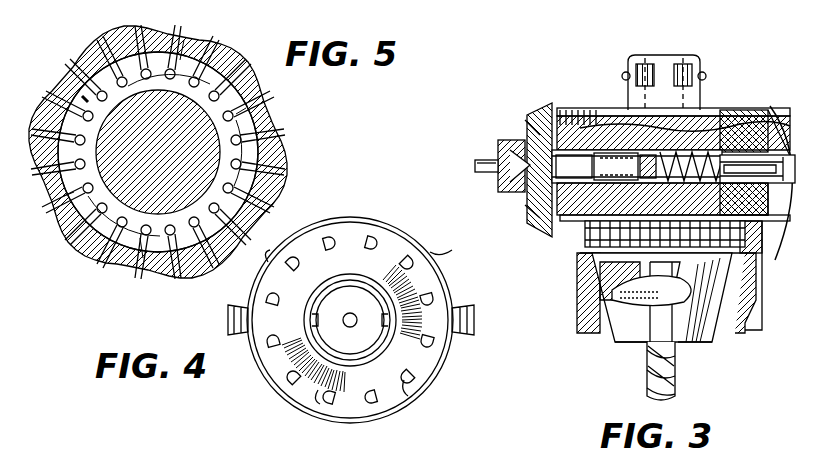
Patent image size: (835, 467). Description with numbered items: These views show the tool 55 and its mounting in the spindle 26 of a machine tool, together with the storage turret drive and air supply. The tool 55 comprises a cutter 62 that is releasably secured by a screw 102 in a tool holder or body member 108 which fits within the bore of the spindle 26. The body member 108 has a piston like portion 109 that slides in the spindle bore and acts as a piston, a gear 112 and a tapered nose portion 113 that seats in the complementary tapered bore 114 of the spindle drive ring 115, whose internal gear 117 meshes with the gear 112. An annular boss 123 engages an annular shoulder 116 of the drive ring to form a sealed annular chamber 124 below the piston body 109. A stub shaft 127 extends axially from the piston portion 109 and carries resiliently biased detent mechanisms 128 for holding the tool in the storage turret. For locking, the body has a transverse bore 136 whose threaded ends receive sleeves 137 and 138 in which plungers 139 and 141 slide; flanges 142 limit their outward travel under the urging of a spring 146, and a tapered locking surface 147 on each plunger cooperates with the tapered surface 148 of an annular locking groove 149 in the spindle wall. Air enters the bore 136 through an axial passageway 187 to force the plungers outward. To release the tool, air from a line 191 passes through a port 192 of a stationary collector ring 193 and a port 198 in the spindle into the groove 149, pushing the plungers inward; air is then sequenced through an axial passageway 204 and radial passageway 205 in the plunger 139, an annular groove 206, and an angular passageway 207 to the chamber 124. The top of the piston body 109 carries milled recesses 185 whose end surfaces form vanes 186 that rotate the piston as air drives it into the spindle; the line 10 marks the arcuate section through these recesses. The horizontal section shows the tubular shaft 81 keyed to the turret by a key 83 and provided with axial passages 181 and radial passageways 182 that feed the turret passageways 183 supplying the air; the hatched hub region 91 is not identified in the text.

In FIG. 4, the section line 10 is at (378, 230).
In FIG. 3, the spindle 26 is at (790, 136).
In FIG. 3, the tool 55 is at (568, 374).
In FIG. 3, the cutter 62 is at (676, 388).
In FIG. 5, the tubular shaft 81 is at (135, 272).
In FIG. 5, the key 83 is at (82, 98).
In FIG. 5, the hub 91 is at (44, 211).
In FIG. 3, the screw 102 is at (600, 300).
In FIG. 3, the tool holder or body member 108 is at (716, 84).
In FIG. 4, the piston like portion 109 is at (452, 294).
In FIG. 3, the piston like portion 109 is at (612, 108).
In FIG. 3, the gear 112 is at (612, 294).
In FIG. 3, the nose portion 113 is at (634, 344).
In FIG. 3, the tapered bore 114 is at (690, 344).
In FIG. 3, the spindle drive ring 115 is at (742, 316).
In FIG. 3, the annular shoulder 116 is at (586, 244).
In FIG. 3, the internal gear 117 is at (756, 248).
In FIG. 3, the annular boss 123 is at (588, 248).
In FIG. 3, the annular chamber 124 is at (580, 236).
In FIG. 4, the stub shaft 127 is at (356, 300).
In FIG. 3, the stub shaft 127 is at (640, 54).
In FIG. 4, the detent mechanisms 128 is at (302, 322).
In FIG. 3, the detent mechanisms 128 is at (712, 66).
In FIG. 3, the transverse bore 136 is at (673, 129).
In FIG. 3, the threaded sleeve 137 is at (550, 104).
In FIG. 3, the threaded sleeve 138 is at (732, 112).
In FIG. 4, the plunger 139 is at (228, 320).
In FIG. 3, the plunger 139 is at (637, 169).
In FIG. 4, the plunger 141 is at (468, 328).
In FIG. 3, the plunger 141 is at (764, 236).
In FIG. 3, the radially extending flanges 142 is at (691, 162).
In FIG. 3, the spring 146 is at (673, 202).
In FIG. 3, the tapered locking surface 147 is at (512, 150).
In FIG. 3, the tapered surface 148 is at (534, 112).
In FIG. 3, the annular locking groove 149 is at (498, 148).
In FIG. 5, the axially extending passages 181 is at (78, 68).
In FIG. 5, the radial passageways 182 is at (188, 38).
In FIG. 5, the passageways 183 is at (270, 108).
In FIG. 4, the milled recesses 185 is at (430, 256).
In FIG. 3, the milled recesses 185 is at (600, 112).
In FIG. 4, the vanes 186 is at (430, 252).
In FIG. 4, the axial passageway 187 is at (352, 315).
In FIG. 3, the axial passageway 187 is at (664, 42).
In FIG. 3, the line 191 is at (478, 163).
In FIG. 3, the port 192 is at (530, 184).
In FIG. 3, the collector ring 193 is at (498, 176).
In FIG. 3, the port 198 is at (536, 196).
In FIG. 3, the axial passageway 204 is at (552, 204).
In FIG. 3, the radially extending passageway 205 is at (552, 214).
In FIG. 3, the annular groove 206 is at (572, 110).
In FIG. 3, the angular passageway 207 is at (556, 232).